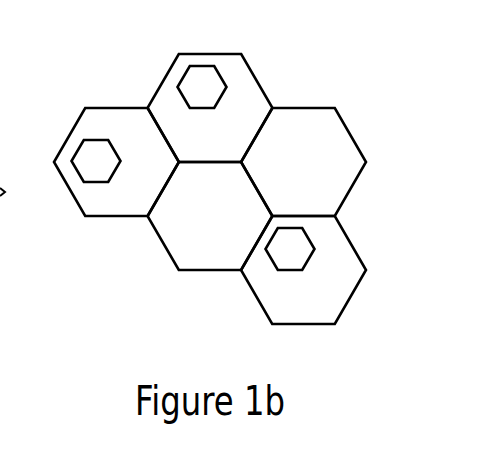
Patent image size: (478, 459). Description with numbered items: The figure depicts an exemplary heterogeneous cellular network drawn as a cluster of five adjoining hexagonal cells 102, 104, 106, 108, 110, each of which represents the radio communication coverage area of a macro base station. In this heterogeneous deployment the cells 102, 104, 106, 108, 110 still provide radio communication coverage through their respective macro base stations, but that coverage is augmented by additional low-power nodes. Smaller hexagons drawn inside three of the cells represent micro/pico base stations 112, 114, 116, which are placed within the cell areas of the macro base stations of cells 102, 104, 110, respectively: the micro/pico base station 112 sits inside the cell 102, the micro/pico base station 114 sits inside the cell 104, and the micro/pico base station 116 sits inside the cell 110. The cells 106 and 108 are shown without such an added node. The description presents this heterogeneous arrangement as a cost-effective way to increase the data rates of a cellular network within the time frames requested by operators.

The cell 102 is at (104, 107).
The cell 104 is at (215, 52).
The cell 106 is at (290, 107).
The cell 108 is at (160, 242).
The cell 110 is at (252, 288).
The micro/pico base station 112 is at (78, 177).
The micro/pico base station 114 is at (192, 62).
The micro/pico base station 116 is at (312, 248).